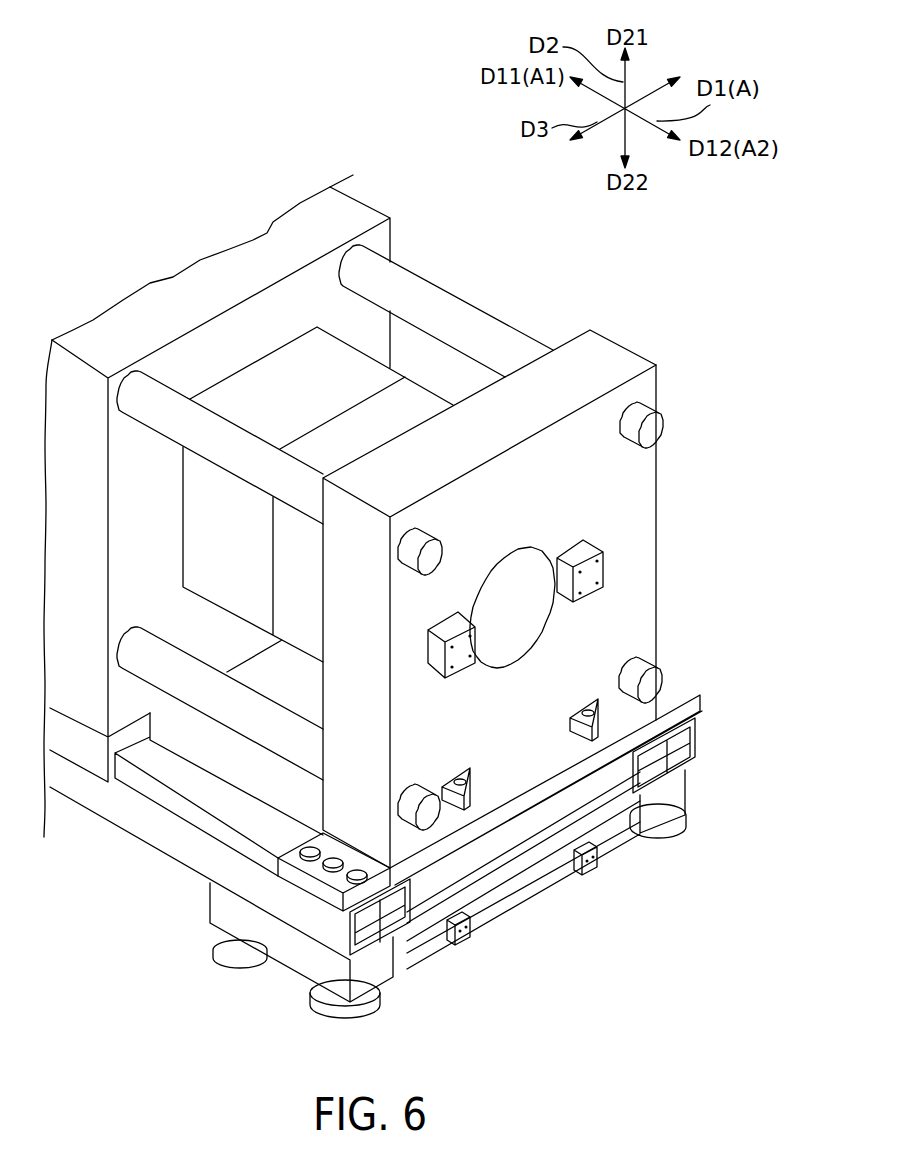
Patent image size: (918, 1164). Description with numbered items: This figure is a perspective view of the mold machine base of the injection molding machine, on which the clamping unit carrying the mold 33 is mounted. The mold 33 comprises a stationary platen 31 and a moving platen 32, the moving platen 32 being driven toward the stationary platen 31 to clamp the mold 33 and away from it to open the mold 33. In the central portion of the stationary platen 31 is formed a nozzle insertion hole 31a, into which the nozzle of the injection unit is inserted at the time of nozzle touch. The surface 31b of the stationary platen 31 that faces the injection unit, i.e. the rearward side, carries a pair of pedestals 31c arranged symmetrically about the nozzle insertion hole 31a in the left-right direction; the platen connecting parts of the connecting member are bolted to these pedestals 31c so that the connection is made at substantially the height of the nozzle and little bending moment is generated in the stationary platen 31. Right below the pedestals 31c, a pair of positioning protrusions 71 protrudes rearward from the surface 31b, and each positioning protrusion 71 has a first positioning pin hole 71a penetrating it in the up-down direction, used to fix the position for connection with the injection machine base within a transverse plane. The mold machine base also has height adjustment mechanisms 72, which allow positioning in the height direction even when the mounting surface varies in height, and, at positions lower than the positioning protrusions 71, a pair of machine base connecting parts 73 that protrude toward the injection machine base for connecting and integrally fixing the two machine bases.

The stationary platen 31 is at (547, 561).
The nozzle insertion hole 31a is at (523, 548).
The surface 31b is at (645, 482).
The pedestal 31c is at (435, 652).
The moving platen 32 is at (263, 250).
The mold 33 is at (360, 336).
The positioning protrusion 71 is at (575, 751).
The first positioning pin hole 71a is at (458, 777).
The height adjustment mechanism 72 is at (690, 818).
The machine base connecting part 73 is at (470, 943).